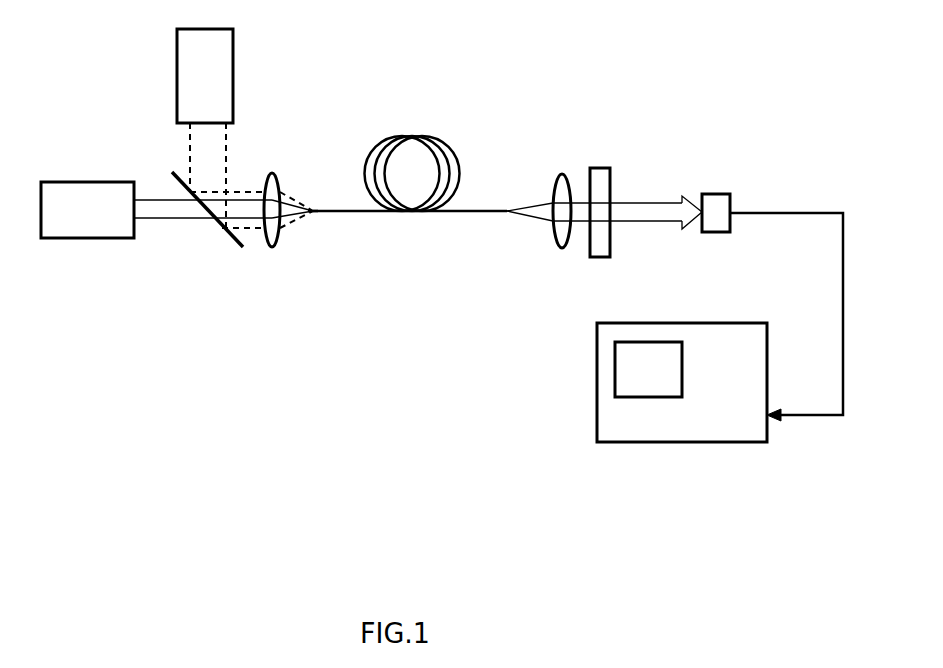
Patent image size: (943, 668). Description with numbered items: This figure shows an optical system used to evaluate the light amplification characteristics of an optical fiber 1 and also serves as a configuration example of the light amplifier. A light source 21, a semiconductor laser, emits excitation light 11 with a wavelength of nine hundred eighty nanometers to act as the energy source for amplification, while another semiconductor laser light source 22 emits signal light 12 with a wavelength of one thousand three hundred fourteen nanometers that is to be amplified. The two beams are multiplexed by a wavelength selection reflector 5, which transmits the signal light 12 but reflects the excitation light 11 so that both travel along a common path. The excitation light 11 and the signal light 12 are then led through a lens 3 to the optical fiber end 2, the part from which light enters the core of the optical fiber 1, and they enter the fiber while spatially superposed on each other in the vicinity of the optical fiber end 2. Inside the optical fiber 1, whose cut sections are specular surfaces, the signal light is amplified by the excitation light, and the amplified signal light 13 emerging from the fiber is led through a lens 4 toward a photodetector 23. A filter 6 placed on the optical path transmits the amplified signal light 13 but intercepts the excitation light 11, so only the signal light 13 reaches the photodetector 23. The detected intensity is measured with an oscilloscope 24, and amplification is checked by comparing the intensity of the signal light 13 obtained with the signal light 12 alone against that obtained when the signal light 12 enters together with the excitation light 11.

The optical fiber 1 is at (438, 140).
The optical fiber end 2 is at (318, 218).
The lens 3 is at (283, 172).
The lens 4 is at (563, 197).
The wavelength selection reflector 5 is at (237, 238).
The filter 6 is at (600, 183).
The excitation light 11 is at (220, 178).
The signal light 12 is at (178, 215).
The signal light 13 is at (630, 213).
The light source 21 is at (222, 92).
The light source 22 is at (103, 197).
The photodetector 23 is at (716, 205).
The oscilloscope 24 is at (687, 429).